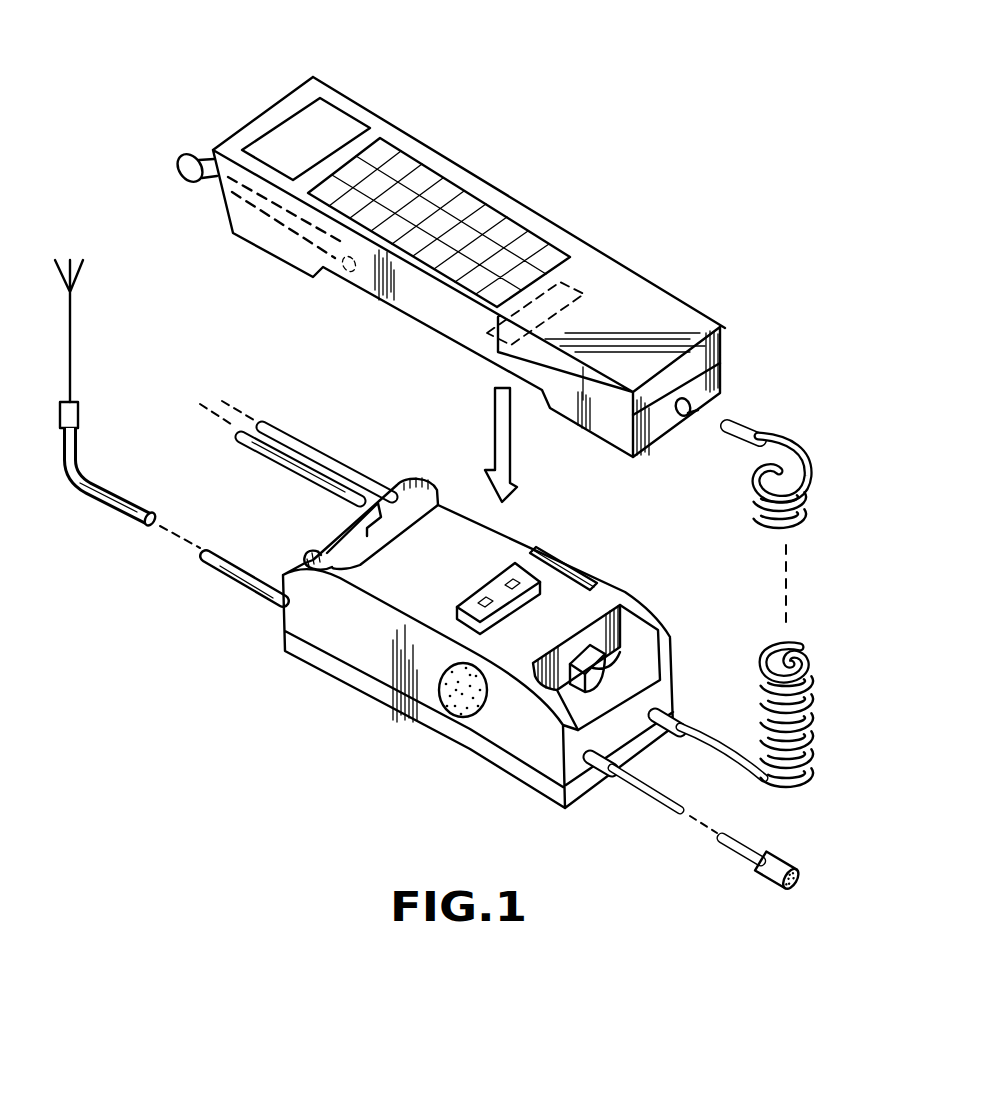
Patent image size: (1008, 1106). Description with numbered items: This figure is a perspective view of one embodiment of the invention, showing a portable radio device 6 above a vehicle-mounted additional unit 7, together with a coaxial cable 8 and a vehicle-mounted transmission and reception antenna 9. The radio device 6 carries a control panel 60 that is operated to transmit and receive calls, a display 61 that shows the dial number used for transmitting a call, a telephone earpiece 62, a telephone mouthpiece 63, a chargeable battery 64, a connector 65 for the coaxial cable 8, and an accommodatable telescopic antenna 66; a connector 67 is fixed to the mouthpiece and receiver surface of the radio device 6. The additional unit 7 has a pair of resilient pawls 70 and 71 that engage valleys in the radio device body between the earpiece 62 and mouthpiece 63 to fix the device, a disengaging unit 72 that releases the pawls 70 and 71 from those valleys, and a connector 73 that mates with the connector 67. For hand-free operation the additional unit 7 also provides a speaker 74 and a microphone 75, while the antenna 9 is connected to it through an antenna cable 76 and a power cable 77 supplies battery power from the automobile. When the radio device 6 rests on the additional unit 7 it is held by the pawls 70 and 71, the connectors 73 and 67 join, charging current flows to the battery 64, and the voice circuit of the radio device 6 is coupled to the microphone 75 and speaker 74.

The portable radio device 6 is at (581, 220).
The vehicle-mounted additional unit 7 is at (396, 722).
The coaxial cable 8 is at (824, 685).
The vehicle-mounted transmission and reception antenna 9 is at (70, 340).
The control panel 60 is at (440, 188).
The display 61 is at (327, 122).
The telephone earpiece 62 is at (267, 252).
The telephone mouthpiece 63 is at (557, 417).
The chargeable battery 64 is at (722, 347).
The connector for the coaxial cable 65 is at (692, 410).
The accommodatable telescopic antenna 66 is at (203, 160).
The connector 67 is at (578, 292).
The resilient pawl 70 is at (603, 657).
The resilient pawl 71 is at (358, 520).
The disengaging unit 72 is at (568, 563).
The connector 73 is at (458, 613).
The speaker 74 is at (462, 722).
The microphone 75 is at (790, 857).
The antenna cable 76 is at (238, 585).
The power cable 77 is at (318, 456).